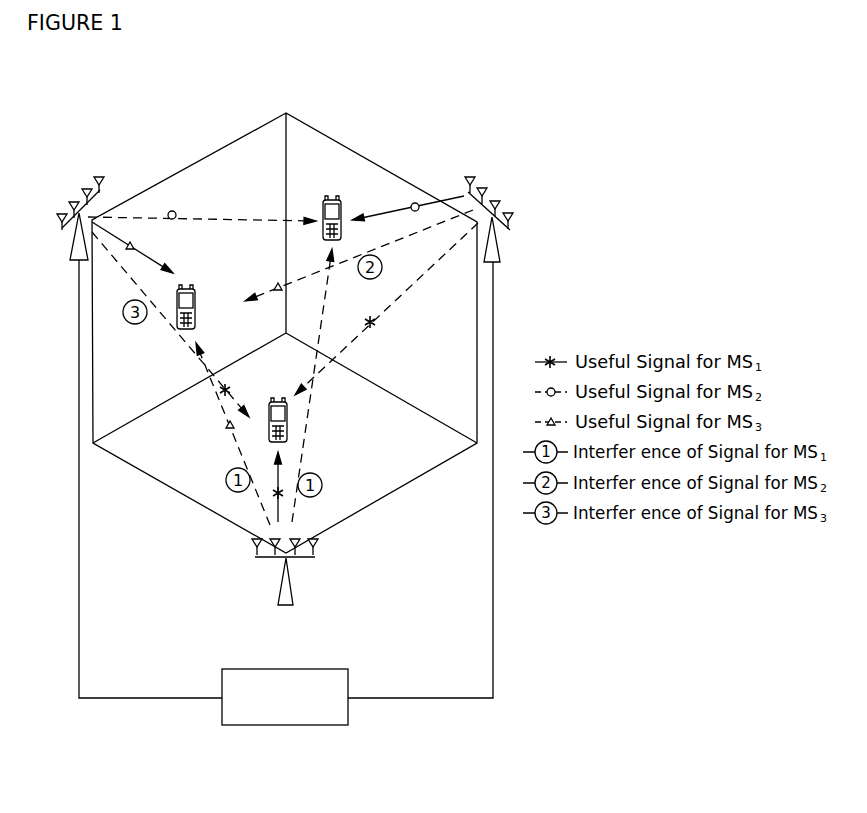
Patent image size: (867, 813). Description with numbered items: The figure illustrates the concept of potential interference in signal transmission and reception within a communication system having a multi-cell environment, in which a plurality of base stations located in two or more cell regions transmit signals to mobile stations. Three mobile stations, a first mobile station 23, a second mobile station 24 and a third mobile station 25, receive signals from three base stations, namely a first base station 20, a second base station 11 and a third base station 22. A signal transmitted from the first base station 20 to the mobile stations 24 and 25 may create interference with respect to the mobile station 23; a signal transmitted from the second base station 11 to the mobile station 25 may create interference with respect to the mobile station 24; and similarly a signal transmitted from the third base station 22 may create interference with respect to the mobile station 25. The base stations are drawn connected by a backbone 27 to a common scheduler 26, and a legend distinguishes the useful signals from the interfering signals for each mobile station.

The second base station BS2 11 is at (537, 242).
The base station 20 is at (333, 590).
The base station 22 is at (45, 280).
The mobile station 23 is at (333, 445).
The mobile station 24 is at (350, 212).
The mobile station 25 is at (200, 287).
The scheduler 26 is at (335, 720).
The backbone 27 is at (543, 695).